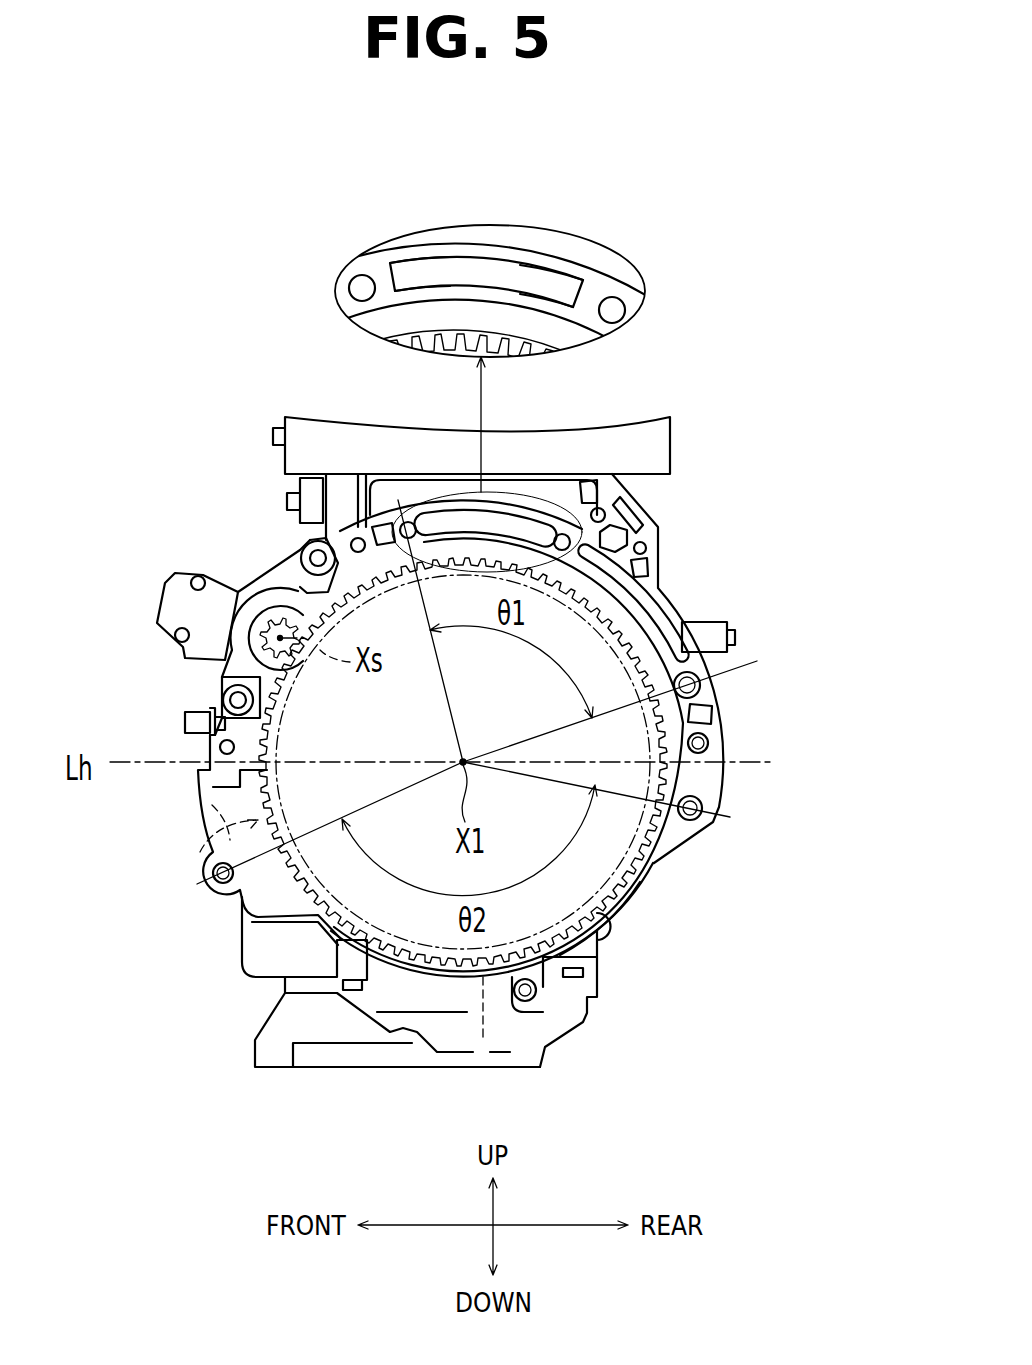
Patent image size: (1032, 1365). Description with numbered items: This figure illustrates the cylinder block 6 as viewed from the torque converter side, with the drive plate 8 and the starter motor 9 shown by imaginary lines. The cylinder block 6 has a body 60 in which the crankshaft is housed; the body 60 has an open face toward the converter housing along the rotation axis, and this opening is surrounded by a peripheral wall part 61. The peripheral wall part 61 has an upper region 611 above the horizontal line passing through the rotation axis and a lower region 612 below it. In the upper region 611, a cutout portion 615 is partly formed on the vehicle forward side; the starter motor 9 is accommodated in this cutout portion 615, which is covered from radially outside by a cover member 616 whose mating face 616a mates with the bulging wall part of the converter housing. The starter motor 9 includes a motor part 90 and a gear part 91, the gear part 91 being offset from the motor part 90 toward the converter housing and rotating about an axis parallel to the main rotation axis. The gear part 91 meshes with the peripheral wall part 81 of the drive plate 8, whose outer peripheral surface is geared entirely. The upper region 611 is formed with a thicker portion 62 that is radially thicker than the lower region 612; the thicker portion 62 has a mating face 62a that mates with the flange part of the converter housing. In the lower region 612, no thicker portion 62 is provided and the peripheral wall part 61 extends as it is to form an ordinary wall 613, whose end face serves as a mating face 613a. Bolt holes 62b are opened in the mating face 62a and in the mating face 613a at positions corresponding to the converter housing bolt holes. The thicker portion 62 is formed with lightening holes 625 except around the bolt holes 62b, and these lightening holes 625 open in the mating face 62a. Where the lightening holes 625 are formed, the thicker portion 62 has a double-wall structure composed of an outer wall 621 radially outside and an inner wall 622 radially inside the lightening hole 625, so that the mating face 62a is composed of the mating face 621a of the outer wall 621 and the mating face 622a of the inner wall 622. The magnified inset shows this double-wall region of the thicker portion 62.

The cylinder block 6 is at (200, 970).
The drive plate 8 is at (203, 873).
The peripheral wall part 81 is at (212, 805).
The starter motor 9 is at (221, 560).
The motor part 90 is at (228, 492).
The gear part 91 is at (282, 628).
The body 60 is at (668, 556).
The peripheral wall part 61 is at (791, 730).
The upper region 611 is at (720, 669).
The lower region 612 is at (766, 783).
The ordinary wall 613 is at (656, 884).
The mating face 613a is at (623, 897).
The cutout portion 615 is at (308, 548).
The cover member 616 is at (148, 644).
The mating face 616a is at (230, 667).
The thicker portion 62 is at (648, 175).
The mating face 62a is at (356, 214).
The bolt holes 62b is at (357, 293).
The outer wall 621 is at (533, 243).
The inner wall 622 is at (537, 290).
The mating face 621a is at (423, 252).
The mating face 622a is at (420, 297).
The lightening holes 625 is at (450, 280).